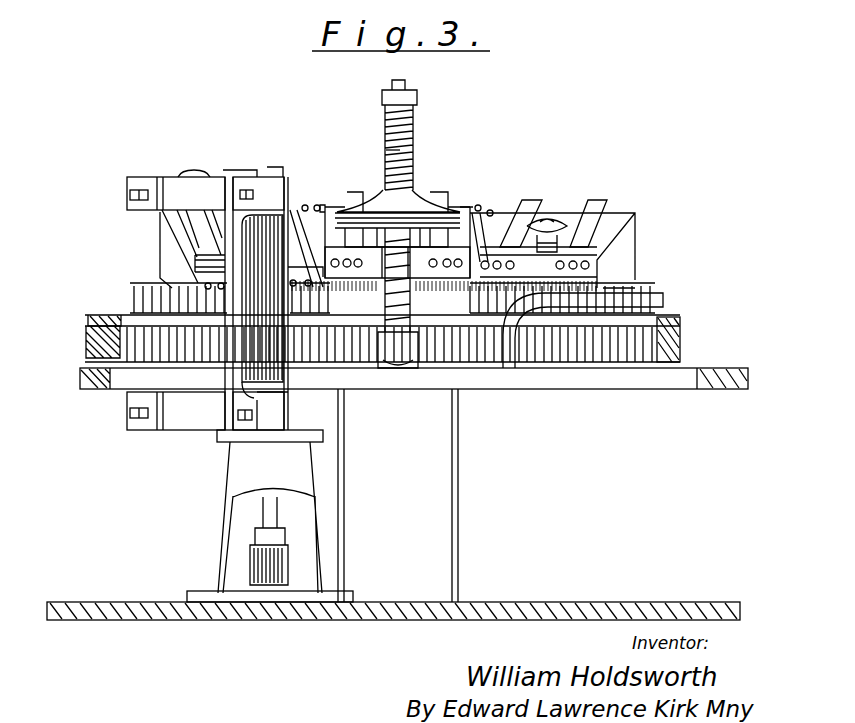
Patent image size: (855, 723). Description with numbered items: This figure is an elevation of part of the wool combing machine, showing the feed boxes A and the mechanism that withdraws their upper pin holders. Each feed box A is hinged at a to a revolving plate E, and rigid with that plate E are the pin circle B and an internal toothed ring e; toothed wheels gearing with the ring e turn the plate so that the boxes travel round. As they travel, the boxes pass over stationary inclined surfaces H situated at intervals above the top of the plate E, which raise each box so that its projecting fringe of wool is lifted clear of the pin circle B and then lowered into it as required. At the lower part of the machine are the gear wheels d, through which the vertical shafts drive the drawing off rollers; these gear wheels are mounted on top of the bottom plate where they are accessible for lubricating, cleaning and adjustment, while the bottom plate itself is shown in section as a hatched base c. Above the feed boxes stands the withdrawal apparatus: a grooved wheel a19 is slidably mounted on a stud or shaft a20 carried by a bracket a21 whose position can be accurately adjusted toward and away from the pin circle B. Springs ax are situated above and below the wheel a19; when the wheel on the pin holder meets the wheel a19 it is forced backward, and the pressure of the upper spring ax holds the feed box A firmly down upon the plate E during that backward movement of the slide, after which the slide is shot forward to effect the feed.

The feed box A is at (625, 247).
The pin circle B is at (148, 293).
The revolving plate E is at (678, 320).
The internal toothed ring e is at (650, 348).
The base plate c is at (533, 620).
The gear wheel d is at (250, 553).
The hinge a is at (633, 291).
The spring ax is at (387, 150).
The wheel a19 is at (420, 213).
The stud or shaft a20 is at (400, 150).
The bracket a21 is at (393, 347).
The stationary inclined surface H is at (500, 307).